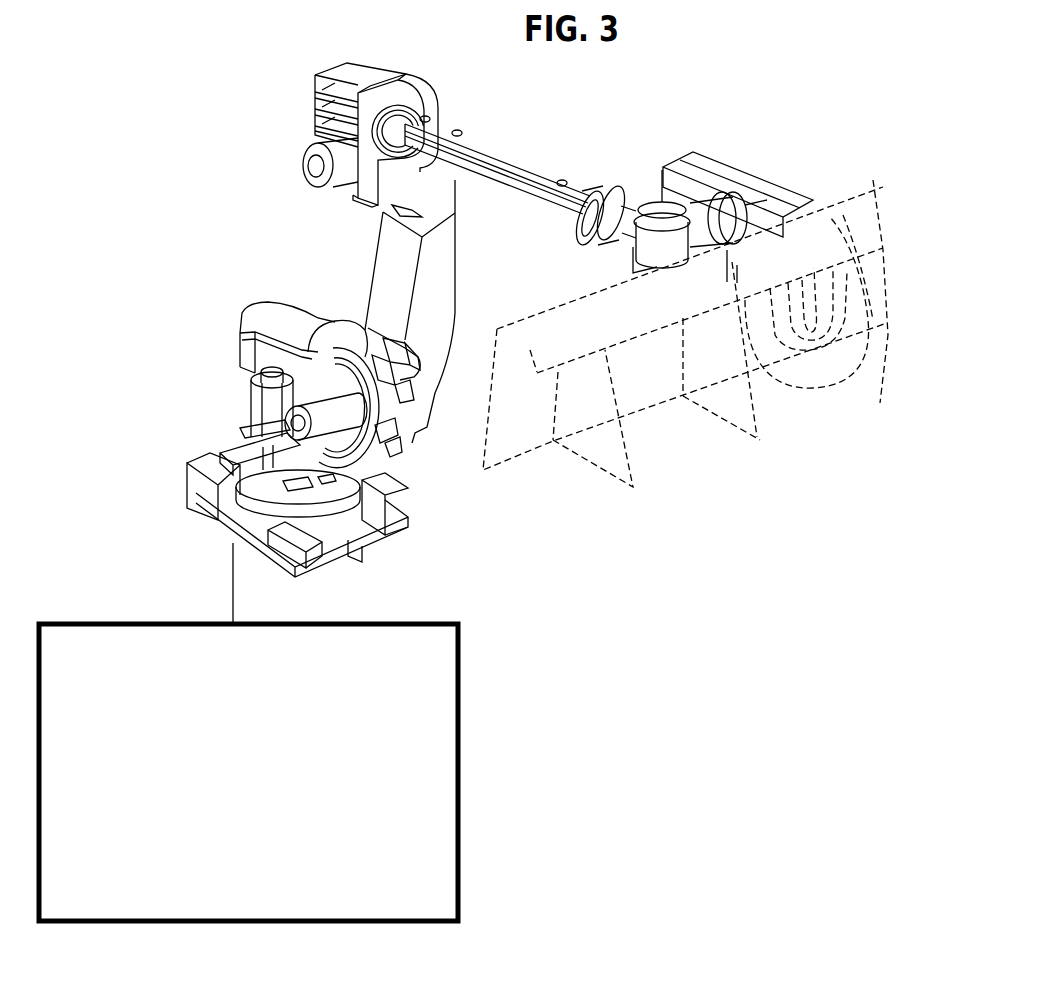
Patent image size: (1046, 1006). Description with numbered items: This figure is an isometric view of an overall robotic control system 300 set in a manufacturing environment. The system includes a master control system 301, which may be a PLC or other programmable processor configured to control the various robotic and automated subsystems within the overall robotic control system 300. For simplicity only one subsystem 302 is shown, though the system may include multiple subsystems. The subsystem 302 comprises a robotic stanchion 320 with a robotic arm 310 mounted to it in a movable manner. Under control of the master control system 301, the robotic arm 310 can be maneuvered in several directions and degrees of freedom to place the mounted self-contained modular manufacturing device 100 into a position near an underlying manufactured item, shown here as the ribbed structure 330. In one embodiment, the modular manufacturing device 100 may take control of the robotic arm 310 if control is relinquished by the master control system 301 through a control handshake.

The self-contained modular manufacturing device 100 is at (764, 152).
The robotic control system 300 is at (447, 101).
The master control system 301 is at (267, 799).
The subsystem 302 is at (270, 283).
The robotic arm 310 is at (525, 144).
The robotic stanchion 320 is at (430, 526).
The ribbed structure 330 is at (748, 448).